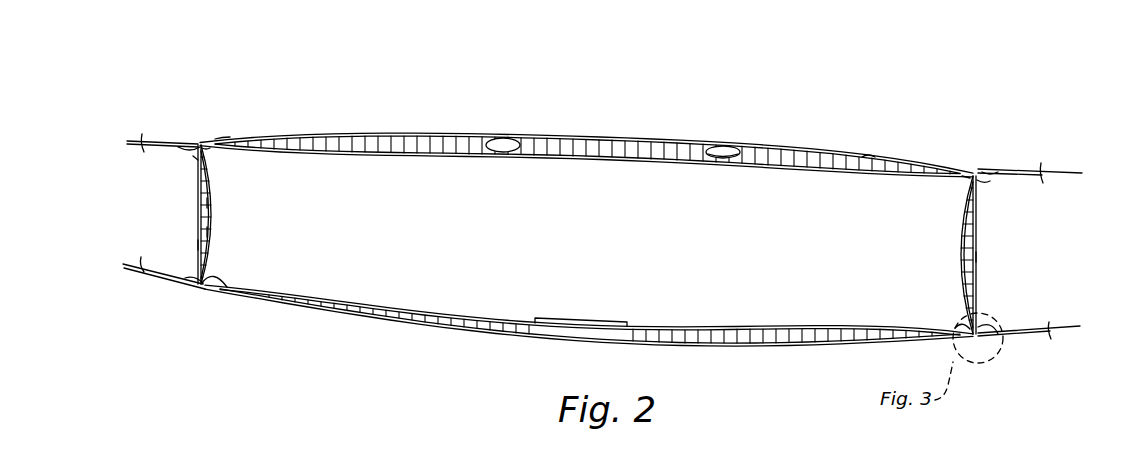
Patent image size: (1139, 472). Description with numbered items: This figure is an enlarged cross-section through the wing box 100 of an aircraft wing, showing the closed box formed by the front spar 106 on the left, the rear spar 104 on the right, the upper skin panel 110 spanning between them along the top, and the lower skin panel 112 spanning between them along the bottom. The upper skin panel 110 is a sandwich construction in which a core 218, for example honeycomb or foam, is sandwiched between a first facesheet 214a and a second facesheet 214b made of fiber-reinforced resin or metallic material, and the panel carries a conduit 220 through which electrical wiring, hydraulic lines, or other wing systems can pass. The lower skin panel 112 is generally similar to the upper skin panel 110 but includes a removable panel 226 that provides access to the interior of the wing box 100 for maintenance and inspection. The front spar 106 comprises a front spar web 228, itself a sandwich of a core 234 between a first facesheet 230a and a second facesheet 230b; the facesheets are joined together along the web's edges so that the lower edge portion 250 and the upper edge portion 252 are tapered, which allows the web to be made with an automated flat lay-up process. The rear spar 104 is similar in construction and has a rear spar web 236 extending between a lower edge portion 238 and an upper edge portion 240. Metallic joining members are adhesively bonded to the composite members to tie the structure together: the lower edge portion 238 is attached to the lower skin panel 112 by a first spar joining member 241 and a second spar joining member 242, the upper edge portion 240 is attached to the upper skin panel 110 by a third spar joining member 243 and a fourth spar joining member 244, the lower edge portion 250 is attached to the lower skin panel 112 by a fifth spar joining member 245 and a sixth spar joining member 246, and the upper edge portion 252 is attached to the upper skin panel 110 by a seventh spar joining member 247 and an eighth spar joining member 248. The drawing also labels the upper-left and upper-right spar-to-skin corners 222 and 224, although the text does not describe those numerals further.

The wing box 100 is at (178, 55).
The rear spar 104 is at (979, 223).
The front spar 106 is at (202, 200).
The upper skin panel 110 is at (622, 130).
The lower skin panel 112 is at (737, 347).
The first facesheet 214a is at (815, 151).
The second facesheet 214b is at (816, 173).
The core 218 is at (870, 157).
The conduit 220 is at (500, 144).
The upper left joint 222 is at (196, 143).
The upper right joint 224 is at (990, 168).
The removable panel 226 is at (562, 343).
The front spar web 228 is at (193, 160).
The first facesheet 230a is at (198, 245).
The second facesheet 230b is at (207, 232).
The core 234 is at (207, 203).
The rear spar web 236 is at (979, 257).
The lower edge portion 238 is at (980, 324).
The upper edge portion 240 is at (980, 182).
The first spar joining member 241 is at (968, 318).
The second spar joining member 242 is at (997, 328).
The third spar joining member 243 is at (970, 176).
The fourth spar joining member 244 is at (1003, 167).
The fifth spar joining member 245 is at (230, 288).
The sixth spar joining member 246 is at (170, 278).
The seventh spar joining member 247 is at (224, 138).
The eighth spar joining member 248 is at (187, 143).
The lower edge portion 250 is at (210, 272).
The upper edge portion 252 is at (203, 149).